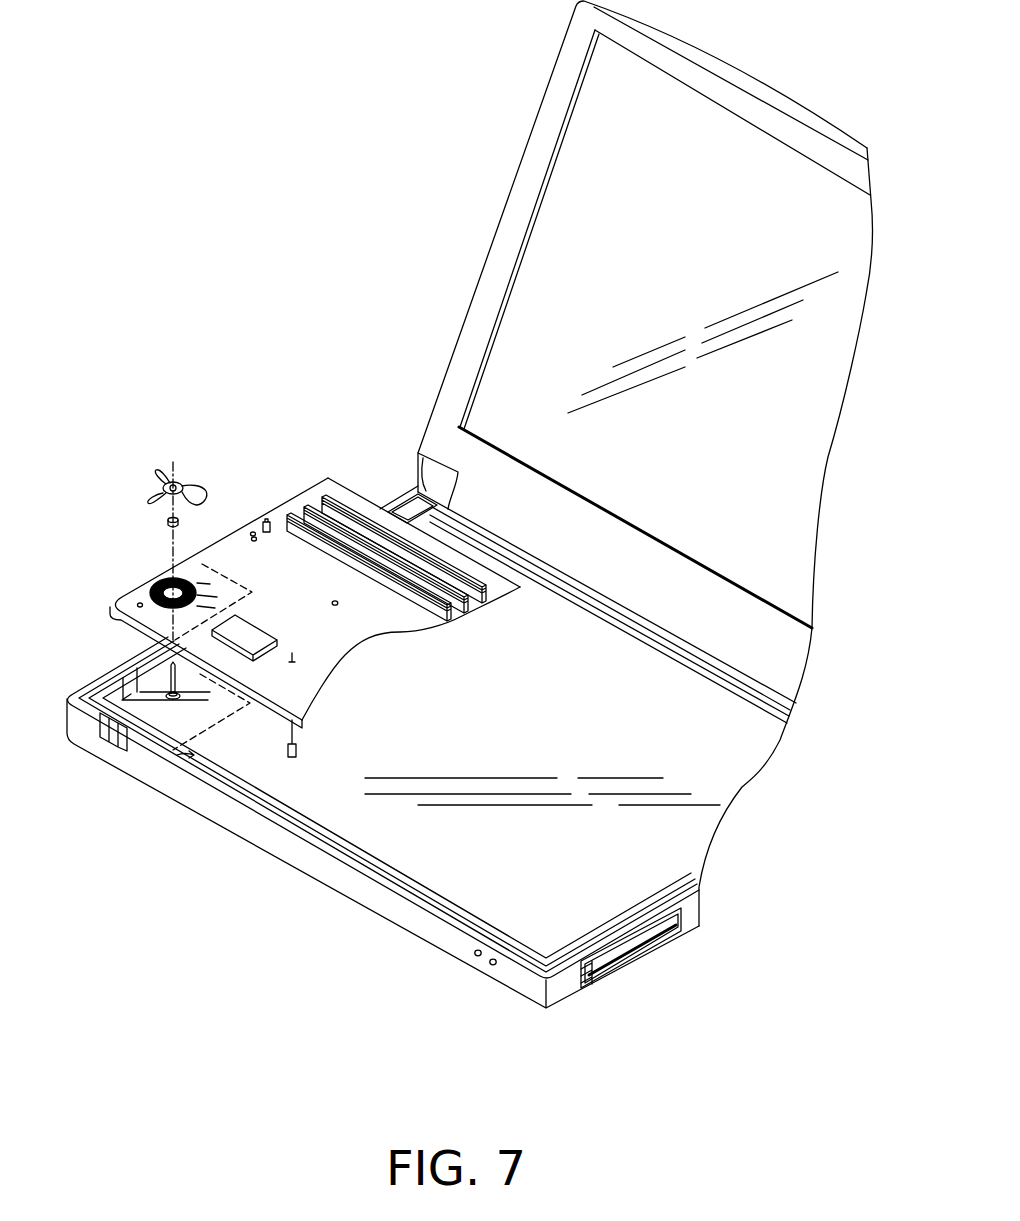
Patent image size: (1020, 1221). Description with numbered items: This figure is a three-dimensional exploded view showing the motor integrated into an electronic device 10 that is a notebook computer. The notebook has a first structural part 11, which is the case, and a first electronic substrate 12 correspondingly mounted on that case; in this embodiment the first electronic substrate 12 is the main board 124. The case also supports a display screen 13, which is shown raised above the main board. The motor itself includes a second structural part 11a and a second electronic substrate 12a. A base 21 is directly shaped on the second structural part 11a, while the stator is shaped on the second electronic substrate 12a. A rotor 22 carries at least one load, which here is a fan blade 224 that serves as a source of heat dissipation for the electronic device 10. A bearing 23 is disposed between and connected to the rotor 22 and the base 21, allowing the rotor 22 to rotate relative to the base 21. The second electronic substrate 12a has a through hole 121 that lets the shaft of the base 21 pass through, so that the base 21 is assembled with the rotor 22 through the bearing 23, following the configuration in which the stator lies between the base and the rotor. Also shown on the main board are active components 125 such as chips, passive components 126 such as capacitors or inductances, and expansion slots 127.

The electronic device 10 is at (247, 225).
The first structural part 11 is at (162, 735).
The second structural part 11a is at (121, 744).
The first electronic substrate 12 is at (333, 653).
The second electronic substrate 12a is at (143, 614).
The through hole 121 is at (160, 588).
The main board 124 is at (228, 558).
The active components 125 is at (253, 642).
The passive components 126 is at (267, 521).
The expansion slots 127 is at (330, 497).
The display screen 13 is at (540, 282).
The base 21 is at (173, 705).
The rotor 22 is at (160, 492).
The fan blade 224 is at (196, 490).
The bearing 23 is at (168, 523).